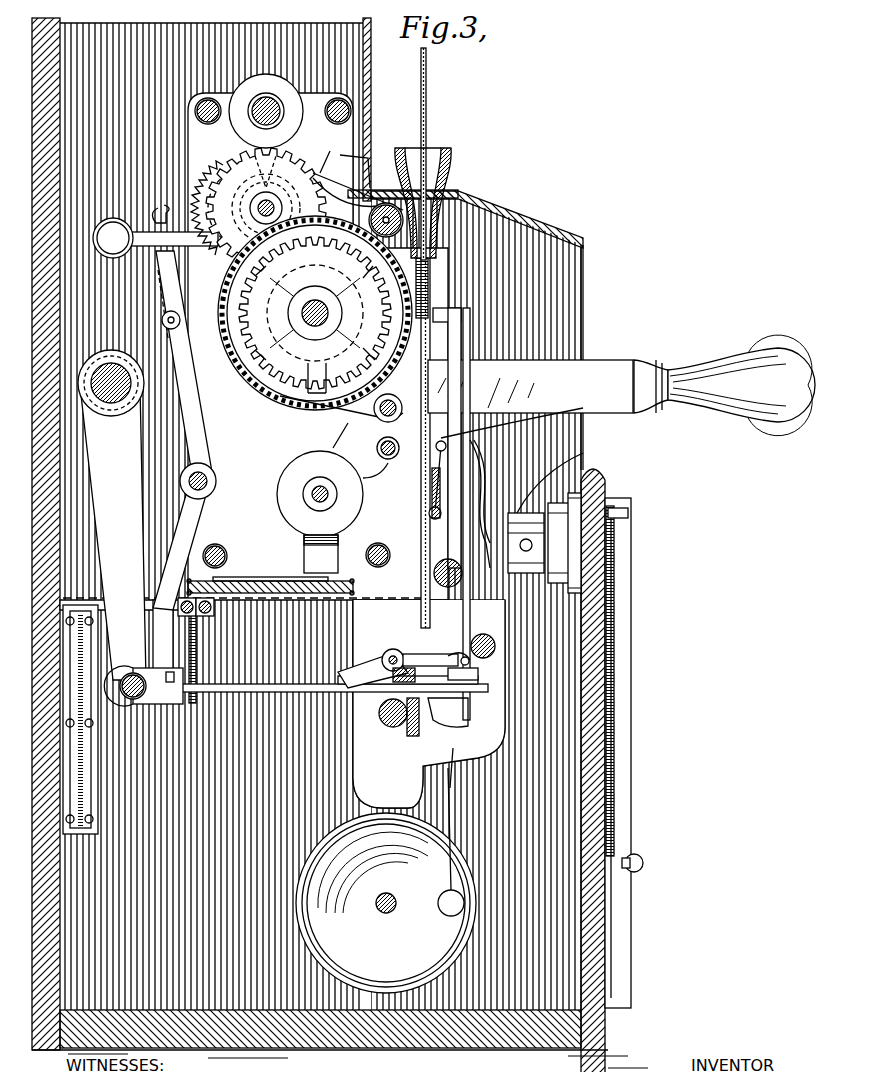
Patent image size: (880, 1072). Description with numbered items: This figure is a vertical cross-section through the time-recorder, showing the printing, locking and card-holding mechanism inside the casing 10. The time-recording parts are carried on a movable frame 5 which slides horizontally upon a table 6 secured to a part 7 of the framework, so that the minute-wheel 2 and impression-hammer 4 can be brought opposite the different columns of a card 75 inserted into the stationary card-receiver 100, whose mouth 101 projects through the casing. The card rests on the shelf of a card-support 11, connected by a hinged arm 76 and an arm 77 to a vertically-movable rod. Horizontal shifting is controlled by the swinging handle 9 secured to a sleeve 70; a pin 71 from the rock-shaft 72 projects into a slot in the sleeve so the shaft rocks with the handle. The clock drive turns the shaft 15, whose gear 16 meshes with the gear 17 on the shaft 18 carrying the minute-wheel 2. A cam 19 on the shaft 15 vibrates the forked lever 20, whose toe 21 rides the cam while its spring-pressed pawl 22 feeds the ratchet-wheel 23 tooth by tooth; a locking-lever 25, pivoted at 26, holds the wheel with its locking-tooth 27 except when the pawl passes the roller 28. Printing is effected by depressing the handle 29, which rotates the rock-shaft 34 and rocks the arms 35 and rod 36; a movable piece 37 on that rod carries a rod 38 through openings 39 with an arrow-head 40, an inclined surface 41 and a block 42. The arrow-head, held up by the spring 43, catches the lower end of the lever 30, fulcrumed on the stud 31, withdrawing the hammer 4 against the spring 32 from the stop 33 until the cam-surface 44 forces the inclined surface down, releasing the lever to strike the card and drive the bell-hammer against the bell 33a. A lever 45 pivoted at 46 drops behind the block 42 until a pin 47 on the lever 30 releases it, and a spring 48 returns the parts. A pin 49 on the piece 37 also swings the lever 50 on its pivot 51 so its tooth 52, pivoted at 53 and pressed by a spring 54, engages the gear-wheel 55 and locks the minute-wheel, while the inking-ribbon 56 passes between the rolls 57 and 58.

The minute-wheel 2 is at (268, 390).
The impression-hammer 4 is at (442, 304).
The movable frame 5 is at (318, 346).
The table 6 is at (260, 574).
The framework 7 is at (82, 598).
The handle 9 is at (622, 688).
The casing 10 is at (598, 925).
The card-support 11 is at (405, 491).
The shaft 15 is at (250, 200).
The gear 16 is at (266, 208).
The gear 17 is at (315, 313).
The shaft 18 is at (321, 305).
The cam 19 is at (300, 168).
The forked lever 20 is at (286, 142).
The toe 21 is at (250, 152).
The spring-pressed pawl 22 is at (271, 208).
The ratchet-wheel 23 is at (290, 362).
The locking-lever 25 is at (330, 398).
The pivot 26 is at (378, 412).
The locking-tooth 27 is at (310, 381).
The roller 28 is at (218, 336).
The handle 29 is at (700, 360).
The lever 30 is at (463, 368).
The stud 31 is at (447, 572).
The spring 32 is at (479, 472).
The stop 33 is at (474, 628).
The bell 33a is at (386, 870).
The rock-shaft 34 is at (112, 412).
The arms 35 is at (113, 533).
The rod 36 is at (122, 665).
The movable piece 37 is at (142, 662).
The rod 38 is at (361, 678).
The openings 39 is at (185, 677).
The arrow-head 40 is at (470, 676).
The inclined surface 41 is at (446, 676).
The block 42 is at (262, 678).
The spring 43 is at (447, 712).
The cam-surface 44 is at (378, 644).
The lever 45 is at (373, 666).
The pivot 46 is at (386, 641).
The pin 47 is at (450, 650).
The spring 48 is at (140, 530).
The pin 49 is at (161, 686).
The lever 50 is at (194, 422).
The pivot 51 is at (208, 473).
The tooth 52 is at (155, 220).
The pivot 53 is at (172, 312).
The spring 54 is at (152, 272).
The gear-wheel 55 is at (239, 194).
The inking-ribbon 56 is at (368, 512).
The roll 57 is at (277, 500).
The roll 58 is at (266, 111).
The sleeve 70 is at (560, 530).
The pin 71 is at (590, 552).
The rock-shaft 72 is at (575, 458).
The card 75 is at (419, 88).
The hinged arm 76 is at (448, 438).
The arm 77 is at (575, 430).
The card-receiver 100 is at (422, 282).
The mouth 101 is at (438, 150).